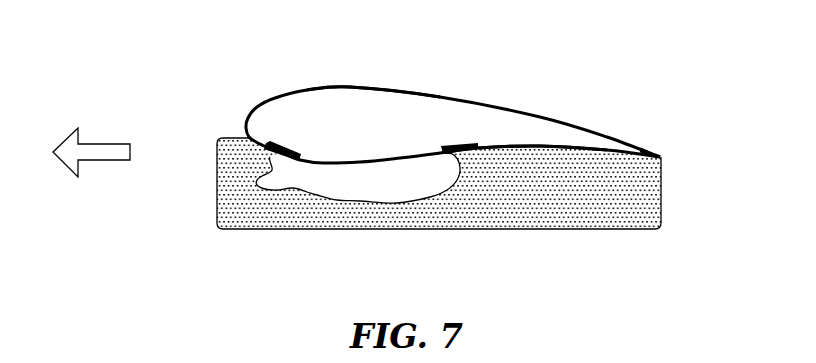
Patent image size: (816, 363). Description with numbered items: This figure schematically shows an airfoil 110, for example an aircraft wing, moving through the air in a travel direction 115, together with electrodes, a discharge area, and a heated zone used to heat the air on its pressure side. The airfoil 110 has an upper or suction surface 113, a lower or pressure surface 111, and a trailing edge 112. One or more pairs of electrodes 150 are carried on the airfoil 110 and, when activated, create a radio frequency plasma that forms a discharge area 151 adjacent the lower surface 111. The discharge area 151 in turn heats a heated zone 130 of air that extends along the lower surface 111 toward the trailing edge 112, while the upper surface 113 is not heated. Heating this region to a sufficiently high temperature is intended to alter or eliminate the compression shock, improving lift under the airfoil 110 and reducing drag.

The airfoil 110 is at (264, 101).
The lower surface 111 is at (503, 152).
The trailing edge 112 is at (661, 158).
The upper surface 113 is at (414, 93).
The travel direction 115 is at (100, 143).
The heated zone 130 is at (216, 207).
The electrodes 150 is at (299, 150).
The discharge area 151 is at (318, 197).